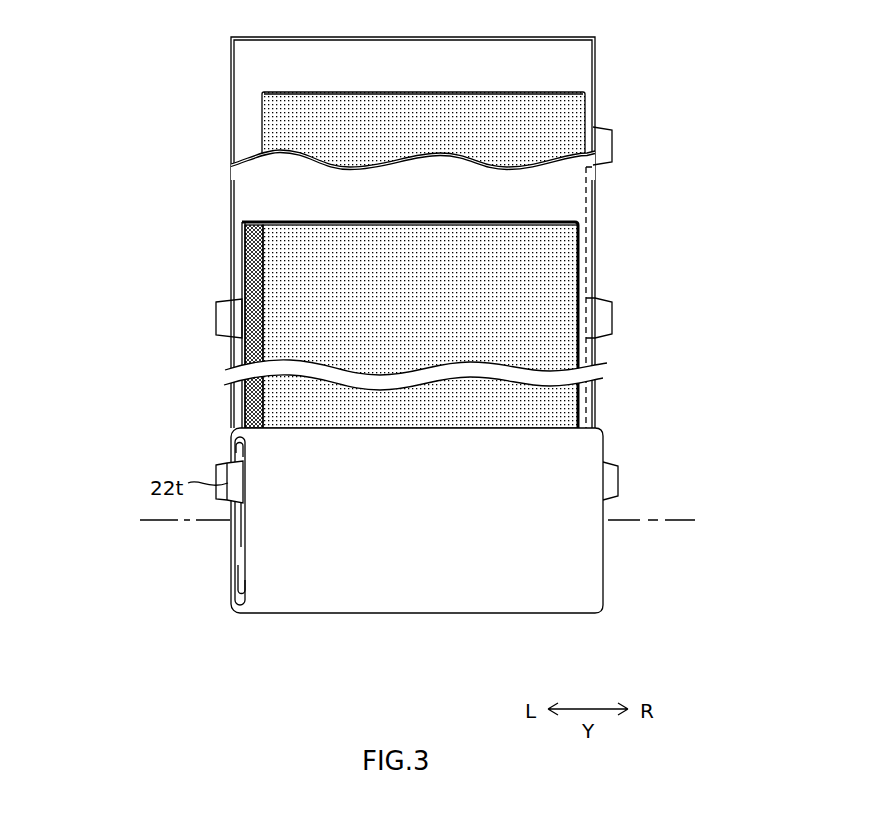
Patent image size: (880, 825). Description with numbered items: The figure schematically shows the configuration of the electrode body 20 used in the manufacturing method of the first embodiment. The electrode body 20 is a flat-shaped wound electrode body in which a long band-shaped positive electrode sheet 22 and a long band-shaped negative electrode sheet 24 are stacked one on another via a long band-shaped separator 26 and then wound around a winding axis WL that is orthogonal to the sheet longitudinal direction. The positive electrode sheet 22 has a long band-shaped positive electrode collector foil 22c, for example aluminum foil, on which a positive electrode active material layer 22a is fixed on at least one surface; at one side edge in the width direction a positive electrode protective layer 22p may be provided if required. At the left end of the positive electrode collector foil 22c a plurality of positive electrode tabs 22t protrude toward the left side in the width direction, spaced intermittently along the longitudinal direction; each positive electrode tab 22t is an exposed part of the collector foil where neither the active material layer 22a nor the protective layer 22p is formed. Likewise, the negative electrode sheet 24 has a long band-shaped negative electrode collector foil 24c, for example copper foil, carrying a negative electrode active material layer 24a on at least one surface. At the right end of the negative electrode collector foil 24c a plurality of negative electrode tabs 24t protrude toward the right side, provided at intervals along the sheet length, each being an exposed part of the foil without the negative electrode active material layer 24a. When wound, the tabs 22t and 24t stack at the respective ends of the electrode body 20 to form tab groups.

The electrode body 20 is at (473, 592).
The positive electrode sheet 22 is at (306, 325).
The positive electrode active material layer 22a is at (295, 286).
The positive electrode collector foil 22c is at (243, 356).
The positive electrode protective layer 22p is at (248, 240).
The positive electrode tab 22t is at (222, 320).
The negative electrode sheet 24 is at (509, 295).
The negative electrode active material layer 24a is at (563, 117).
The negative electrode collector foil 24c is at (591, 235).
The negative electrode tab 24t is at (605, 146).
The separator 26 is at (252, 57).
The winding axis WL is at (680, 520).